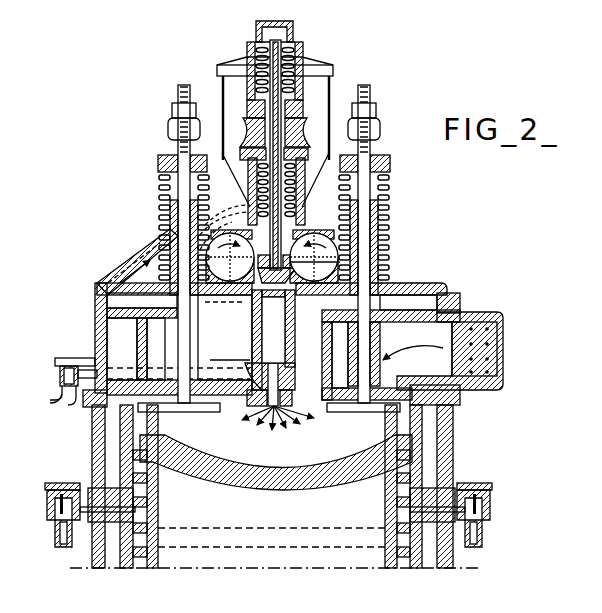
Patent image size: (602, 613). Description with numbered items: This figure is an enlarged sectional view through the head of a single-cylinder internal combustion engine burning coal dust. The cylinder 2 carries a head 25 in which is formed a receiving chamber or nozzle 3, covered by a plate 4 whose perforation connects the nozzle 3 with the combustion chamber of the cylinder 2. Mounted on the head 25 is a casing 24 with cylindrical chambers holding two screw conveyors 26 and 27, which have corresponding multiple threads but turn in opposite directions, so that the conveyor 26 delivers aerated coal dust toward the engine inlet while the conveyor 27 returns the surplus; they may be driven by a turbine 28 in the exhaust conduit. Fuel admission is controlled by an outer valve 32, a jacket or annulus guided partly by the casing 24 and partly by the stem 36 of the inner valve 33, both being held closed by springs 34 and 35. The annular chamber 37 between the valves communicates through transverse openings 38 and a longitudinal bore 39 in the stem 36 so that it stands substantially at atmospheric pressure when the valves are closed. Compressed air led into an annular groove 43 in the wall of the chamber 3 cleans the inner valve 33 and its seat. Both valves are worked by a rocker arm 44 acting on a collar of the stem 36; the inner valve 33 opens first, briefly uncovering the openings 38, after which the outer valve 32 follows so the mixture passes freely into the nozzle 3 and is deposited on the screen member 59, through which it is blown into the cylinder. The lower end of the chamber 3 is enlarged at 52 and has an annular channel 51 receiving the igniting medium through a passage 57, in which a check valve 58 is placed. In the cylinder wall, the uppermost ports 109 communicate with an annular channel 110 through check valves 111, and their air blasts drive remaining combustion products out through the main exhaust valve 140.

The cylinder 2 is at (415, 447).
The receiving chamber or nozzle 3 is at (284, 324).
The plate 4 is at (270, 419).
The casing 24 is at (300, 232).
The head 25 is at (400, 284).
The screw conveyor 26 is at (232, 270).
The screw conveyor 27 is at (320, 262).
The turbine 28 is at (240, 212).
The outer valve 32 is at (230, 256).
The inner valve 33 is at (314, 256).
The spring 34 is at (298, 182).
The spring 35 is at (302, 56).
The stem 36 is at (300, 143).
The annular chamber 37 is at (250, 226).
The transverse openings 38 is at (244, 300).
The longitudinal opening or bore 39 is at (282, 93).
The annular groove 43 is at (289, 300).
The rocker arm 44 is at (262, 126).
The annular channel 51 is at (326, 405).
The enlarged lower extremity 52 is at (258, 360).
The passage 57 is at (62, 403).
The check valve 58 is at (73, 358).
The screen member 59 is at (289, 352).
The ports 109 is at (135, 512).
The annular channel 110 is at (62, 545).
The check valves 111 is at (56, 527).
The main exhaust valve 140 is at (173, 404).